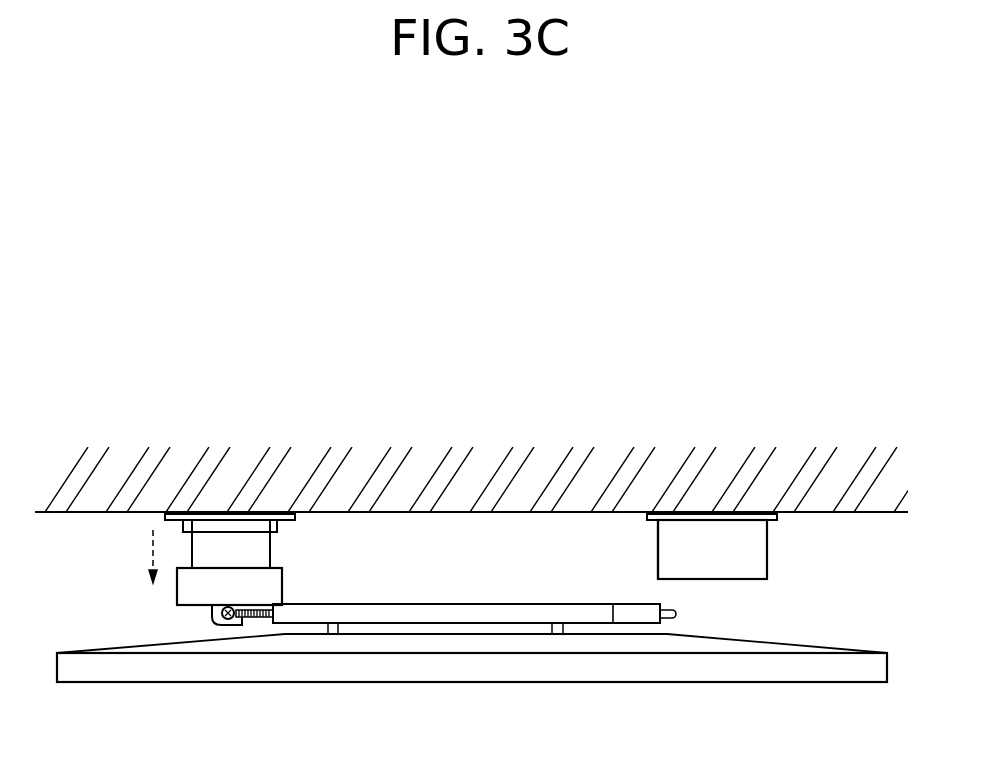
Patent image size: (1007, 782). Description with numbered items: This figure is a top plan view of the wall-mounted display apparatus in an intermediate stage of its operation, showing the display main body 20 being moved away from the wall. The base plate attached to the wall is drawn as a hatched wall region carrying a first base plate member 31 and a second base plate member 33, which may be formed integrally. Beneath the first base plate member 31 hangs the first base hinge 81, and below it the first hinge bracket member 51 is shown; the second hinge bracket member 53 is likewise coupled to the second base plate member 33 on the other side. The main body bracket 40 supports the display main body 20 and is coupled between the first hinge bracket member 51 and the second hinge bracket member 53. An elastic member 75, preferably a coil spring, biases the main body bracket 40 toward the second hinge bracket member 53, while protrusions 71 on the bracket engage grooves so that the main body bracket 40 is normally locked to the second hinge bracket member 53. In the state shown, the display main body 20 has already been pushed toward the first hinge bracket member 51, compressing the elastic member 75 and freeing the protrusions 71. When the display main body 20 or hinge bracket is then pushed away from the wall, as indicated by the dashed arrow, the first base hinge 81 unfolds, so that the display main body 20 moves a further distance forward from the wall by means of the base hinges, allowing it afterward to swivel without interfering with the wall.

The display main body 20 is at (527, 673).
The first base plate member 31 is at (224, 512).
The second base plate member 33 is at (735, 512).
The main body bracket 40 is at (408, 613).
The first hinge bracket member 51 is at (282, 580).
The second hinge bracket member 53 is at (665, 545).
The protrusion 71 is at (672, 620).
The elastic member 75 is at (258, 618).
The first base hinge 81 is at (270, 548).